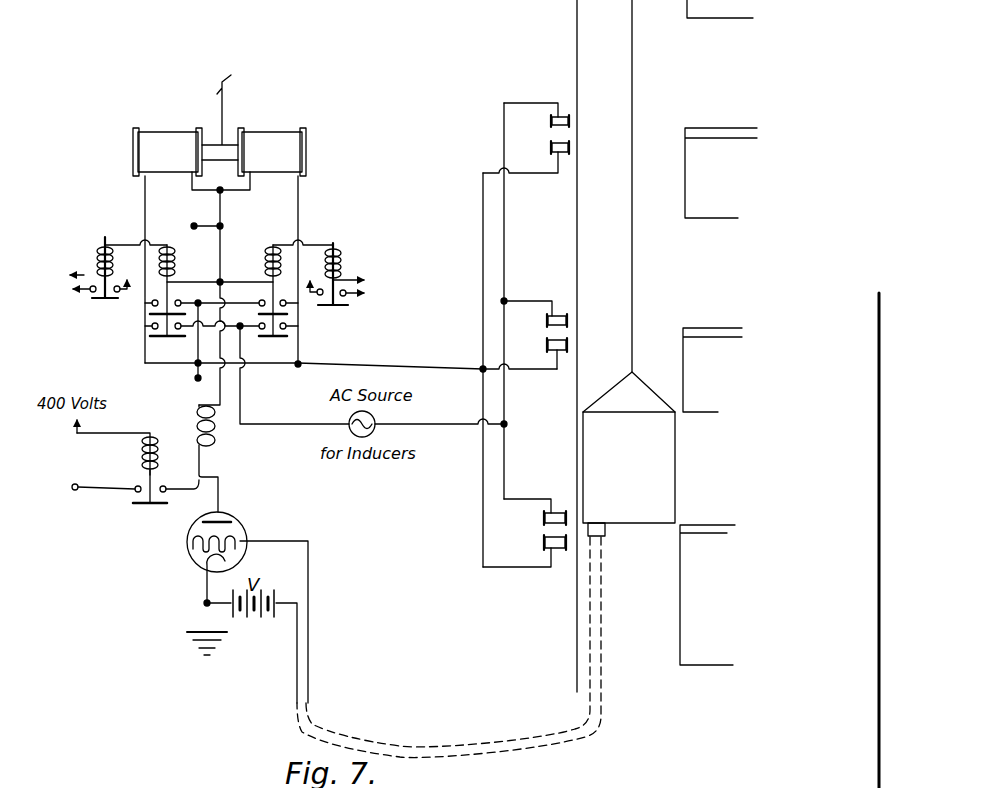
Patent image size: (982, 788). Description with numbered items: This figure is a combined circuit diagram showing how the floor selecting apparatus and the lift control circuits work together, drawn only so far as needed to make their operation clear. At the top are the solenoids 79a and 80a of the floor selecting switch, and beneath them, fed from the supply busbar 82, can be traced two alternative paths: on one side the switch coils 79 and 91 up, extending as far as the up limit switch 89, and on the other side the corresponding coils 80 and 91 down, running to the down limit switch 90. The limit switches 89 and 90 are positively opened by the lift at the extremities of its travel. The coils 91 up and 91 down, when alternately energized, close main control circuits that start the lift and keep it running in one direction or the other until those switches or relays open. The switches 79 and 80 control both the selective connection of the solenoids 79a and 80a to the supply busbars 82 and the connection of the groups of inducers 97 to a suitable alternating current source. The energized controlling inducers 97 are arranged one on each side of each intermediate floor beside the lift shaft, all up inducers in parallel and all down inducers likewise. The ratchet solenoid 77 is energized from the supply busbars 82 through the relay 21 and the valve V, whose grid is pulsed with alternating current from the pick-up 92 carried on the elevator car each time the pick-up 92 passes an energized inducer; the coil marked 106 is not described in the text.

The solenoid 79a is at (167, 152).
The solenoid 80a is at (272, 152).
The supply busbar 82 is at (152, 360).
The switch coil 91 is at (97, 262).
The up limit switch 89 is at (77, 285).
The down limit switch 90 is at (357, 295).
The switch coil 79 is at (197, 271).
The switch coil 80 is at (259, 271).
The ratchet solenoid 77 is at (209, 430).
The relay coil 106 is at (141, 457).
The relay 21 is at (158, 478).
The controlling inducer 97 is at (560, 117).
The pick-up 92 is at (598, 530).